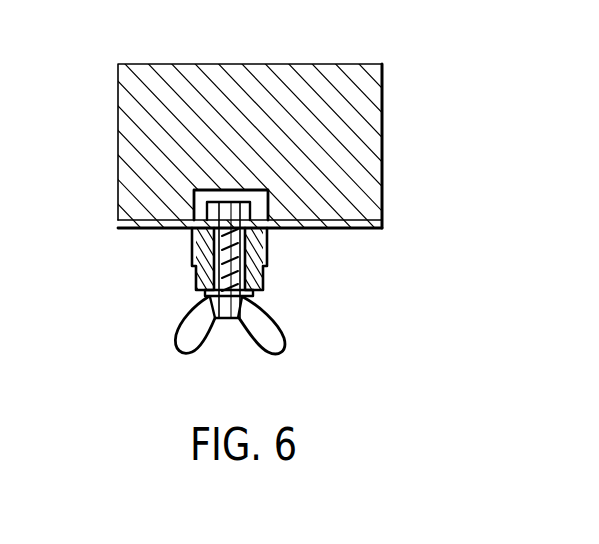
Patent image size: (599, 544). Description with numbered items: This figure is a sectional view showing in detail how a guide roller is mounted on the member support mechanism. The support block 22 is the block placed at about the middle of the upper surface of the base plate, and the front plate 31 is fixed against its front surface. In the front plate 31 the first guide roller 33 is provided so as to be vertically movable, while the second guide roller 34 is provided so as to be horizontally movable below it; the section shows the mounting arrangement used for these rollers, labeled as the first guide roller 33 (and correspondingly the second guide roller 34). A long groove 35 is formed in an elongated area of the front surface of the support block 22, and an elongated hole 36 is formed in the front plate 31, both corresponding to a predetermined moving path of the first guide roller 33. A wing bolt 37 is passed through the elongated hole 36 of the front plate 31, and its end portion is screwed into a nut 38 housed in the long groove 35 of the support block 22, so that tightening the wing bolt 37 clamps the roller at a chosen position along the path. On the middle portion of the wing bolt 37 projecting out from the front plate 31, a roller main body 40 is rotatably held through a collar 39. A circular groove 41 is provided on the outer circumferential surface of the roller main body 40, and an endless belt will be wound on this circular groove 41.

The support block 22 is at (355, 103).
The front plate 31 is at (143, 229).
The first guide roller 33 is at (115, 286).
The second guide roller 34 is at (168, 253).
The long groove 35 is at (218, 196).
The elongated hole 36 is at (210, 196).
The wing bolt 37 is at (199, 330).
The nut 38 is at (252, 209).
The collar 39 is at (255, 297).
The roller main body 40 is at (267, 245).
The circular groove 41 is at (268, 268).